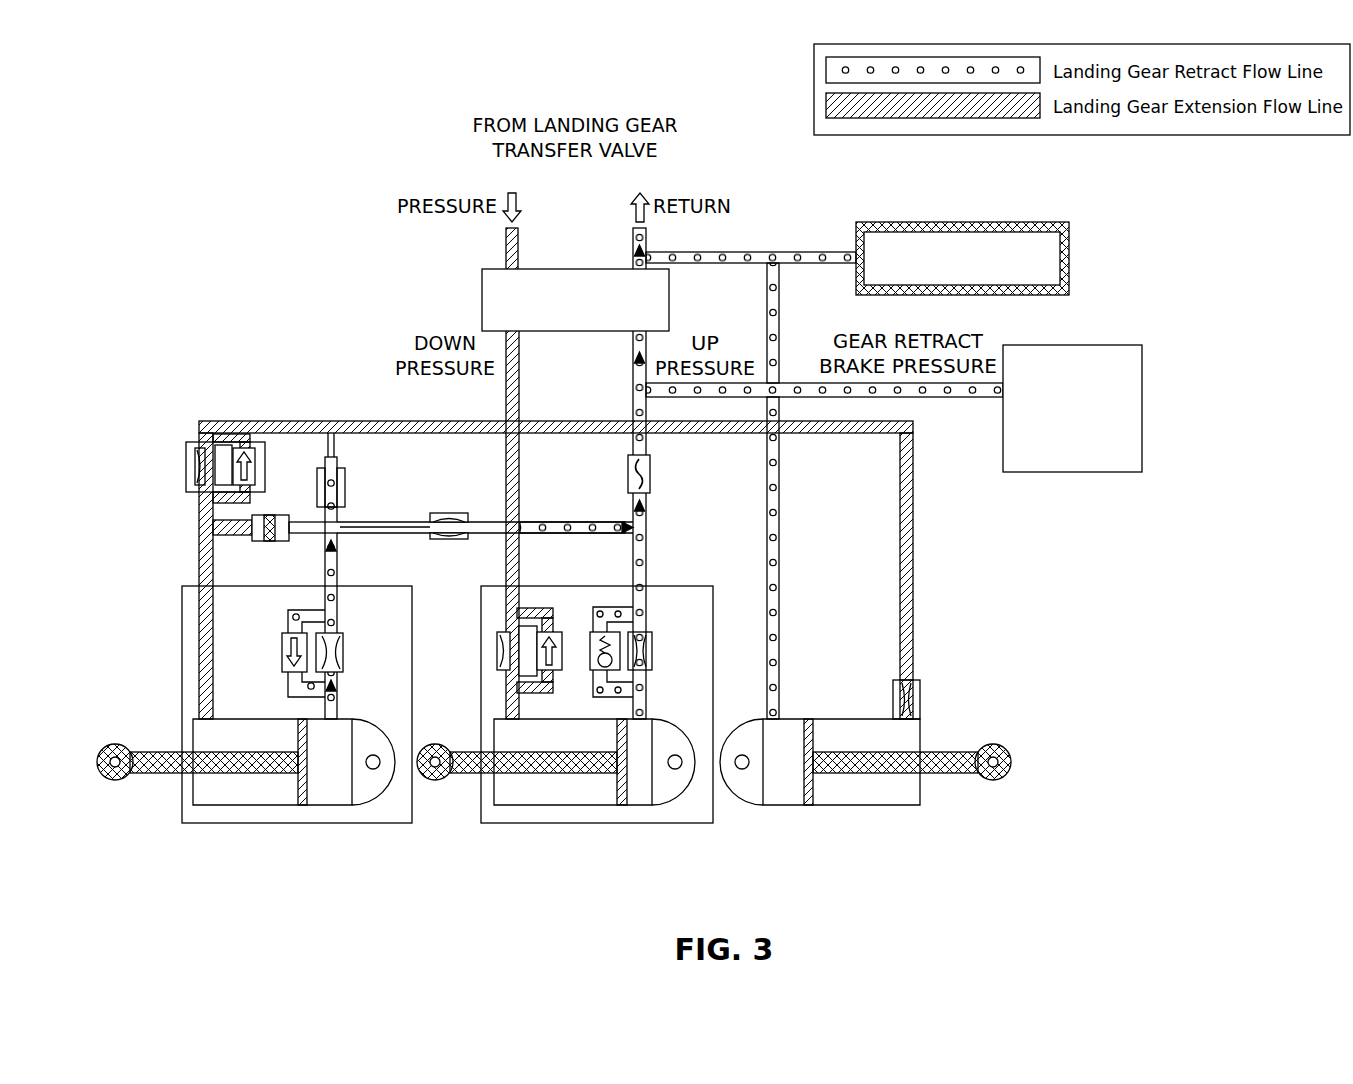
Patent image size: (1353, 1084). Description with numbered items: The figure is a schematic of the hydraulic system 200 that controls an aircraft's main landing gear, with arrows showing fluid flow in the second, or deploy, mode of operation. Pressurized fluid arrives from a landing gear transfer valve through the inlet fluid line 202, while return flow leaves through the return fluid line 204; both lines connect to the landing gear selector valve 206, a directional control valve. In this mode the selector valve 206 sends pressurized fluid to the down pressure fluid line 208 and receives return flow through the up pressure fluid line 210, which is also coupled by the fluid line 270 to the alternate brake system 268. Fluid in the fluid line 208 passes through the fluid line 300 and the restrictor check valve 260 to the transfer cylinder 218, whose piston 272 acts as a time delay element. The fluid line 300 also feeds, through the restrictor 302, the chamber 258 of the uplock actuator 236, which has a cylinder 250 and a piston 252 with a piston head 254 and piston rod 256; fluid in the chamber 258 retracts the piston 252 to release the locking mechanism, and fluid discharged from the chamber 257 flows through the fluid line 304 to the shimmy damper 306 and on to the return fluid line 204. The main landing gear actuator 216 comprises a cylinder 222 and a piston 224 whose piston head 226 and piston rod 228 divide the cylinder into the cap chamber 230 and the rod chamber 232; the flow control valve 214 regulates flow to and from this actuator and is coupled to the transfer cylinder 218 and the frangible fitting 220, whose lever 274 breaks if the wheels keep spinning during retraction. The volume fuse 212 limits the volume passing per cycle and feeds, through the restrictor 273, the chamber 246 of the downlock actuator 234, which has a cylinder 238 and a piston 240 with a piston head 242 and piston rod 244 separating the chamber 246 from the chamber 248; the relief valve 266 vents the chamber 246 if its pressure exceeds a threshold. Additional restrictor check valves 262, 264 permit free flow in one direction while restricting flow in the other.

The hydraulic system 200 is at (272, 243).
The inlet fluid line 202 is at (506, 238).
The return fluid line 204 is at (650, 250).
The landing gear selector valve 206 is at (482, 297).
The fluid line 208 is at (506, 415).
The fluid line 210 is at (633, 380).
The volume fuse 212 is at (656, 478).
The flow control valve 214 is at (470, 510).
The main landing gear actuator 216 is at (231, 730).
The transfer cylinder 218 is at (250, 540).
The frangible fitting 220 is at (345, 490).
The cylinder 222 is at (228, 718).
The piston 224 is at (142, 745).
The piston head 226 is at (298, 738).
The piston rod 228 is at (168, 752).
The chamber 230 is at (343, 740).
The chamber 232 is at (205, 790).
The downlock actuator 234 is at (565, 730).
The uplock actuator 236 is at (901, 742).
The cylinder 238 is at (497, 740).
The piston 240 is at (460, 745).
The piston head 242 is at (617, 748).
The piston rod 244 is at (483, 745).
The chamber 246 is at (655, 740).
The chamber 248 is at (518, 790).
The cylinder 250 is at (848, 718).
The piston 252 is at (995, 742).
The piston head 254 is at (810, 718).
The piston rod 256 is at (950, 752).
The chamber 257 is at (778, 740).
The chamber 258 is at (905, 790).
The restrictor check valve 260 is at (186, 455).
The restrictor check valve 262 is at (357, 617).
The restrictor check valve 264 is at (530, 605).
The relief valve 266 is at (617, 632).
The alternate brake system 268 is at (1072, 408).
The fluid line 270 is at (800, 383).
The piston 272 is at (270, 515).
The restrictor 273 is at (655, 650).
The lever 274 is at (330, 445).
The fluid line 300 is at (217, 421).
The restrictor 302 is at (928, 672).
The fluid line 304 is at (779, 540).
The shimmy damper 306 is at (1070, 245).